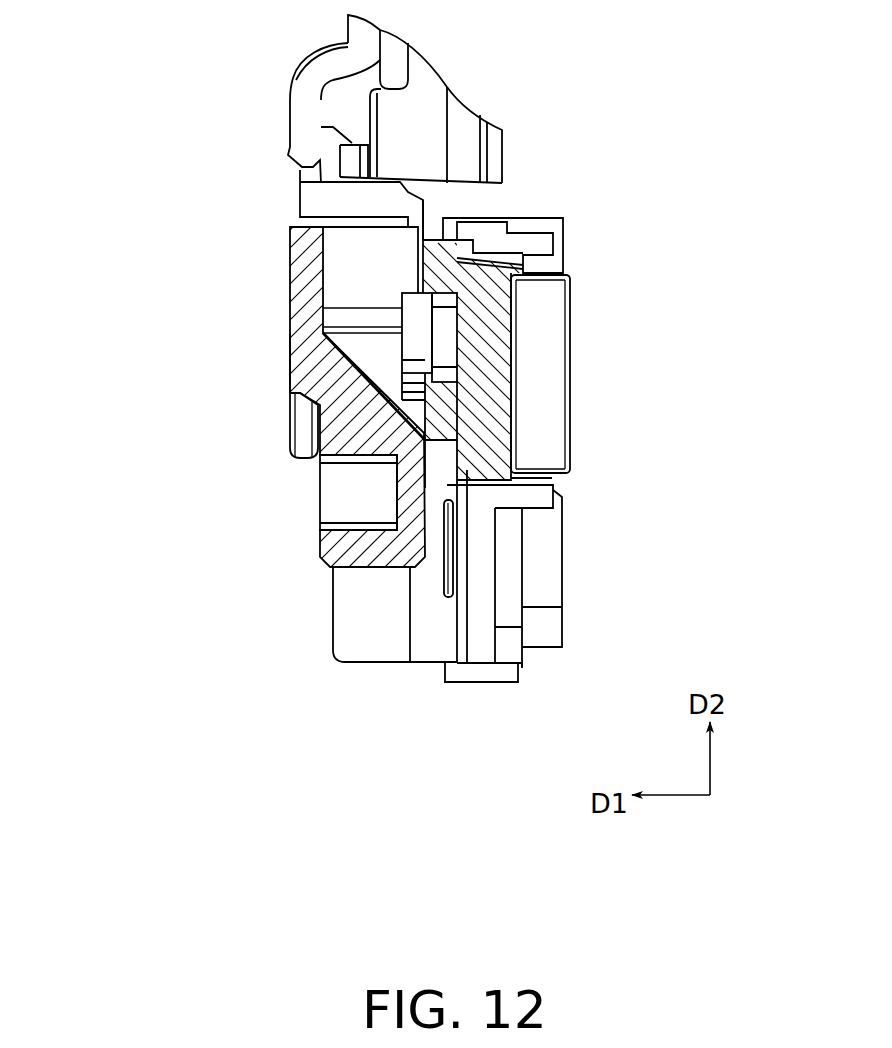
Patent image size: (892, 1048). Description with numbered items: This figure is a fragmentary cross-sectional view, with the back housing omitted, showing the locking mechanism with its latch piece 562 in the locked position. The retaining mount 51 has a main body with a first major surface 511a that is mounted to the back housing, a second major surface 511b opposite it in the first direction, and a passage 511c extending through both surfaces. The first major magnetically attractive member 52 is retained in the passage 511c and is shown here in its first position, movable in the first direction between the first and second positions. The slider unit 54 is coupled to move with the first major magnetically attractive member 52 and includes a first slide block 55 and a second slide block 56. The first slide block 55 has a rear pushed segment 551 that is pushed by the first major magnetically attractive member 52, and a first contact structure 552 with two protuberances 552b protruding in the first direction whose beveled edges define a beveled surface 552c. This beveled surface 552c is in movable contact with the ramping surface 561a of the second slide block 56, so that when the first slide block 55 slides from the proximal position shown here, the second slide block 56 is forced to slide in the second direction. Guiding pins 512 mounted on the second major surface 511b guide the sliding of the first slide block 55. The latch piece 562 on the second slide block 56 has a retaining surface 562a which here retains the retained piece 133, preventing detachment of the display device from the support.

The retained piece 133 is at (289, 110).
The retaining surface 562a is at (297, 175).
The latch piece 562 is at (316, 202).
The slider unit 54 is at (255, 263).
The guiding pins 512 is at (353, 325).
The second slide block 56 is at (310, 365).
The ramping surface 561a is at (337, 372).
The beveled surface 552c is at (397, 457).
The second major surface 511b is at (463, 540).
The first contact structure 552 is at (445, 252).
The first slide block 55 is at (500, 258).
The rear pushed segment 551 is at (492, 327).
The first major magnetically attractive member 52 is at (540, 373).
The protuberances 552b is at (417, 415).
The passage 511c is at (537, 478).
The first major surface 511a is at (553, 497).
The retaining mount 51 is at (483, 637).